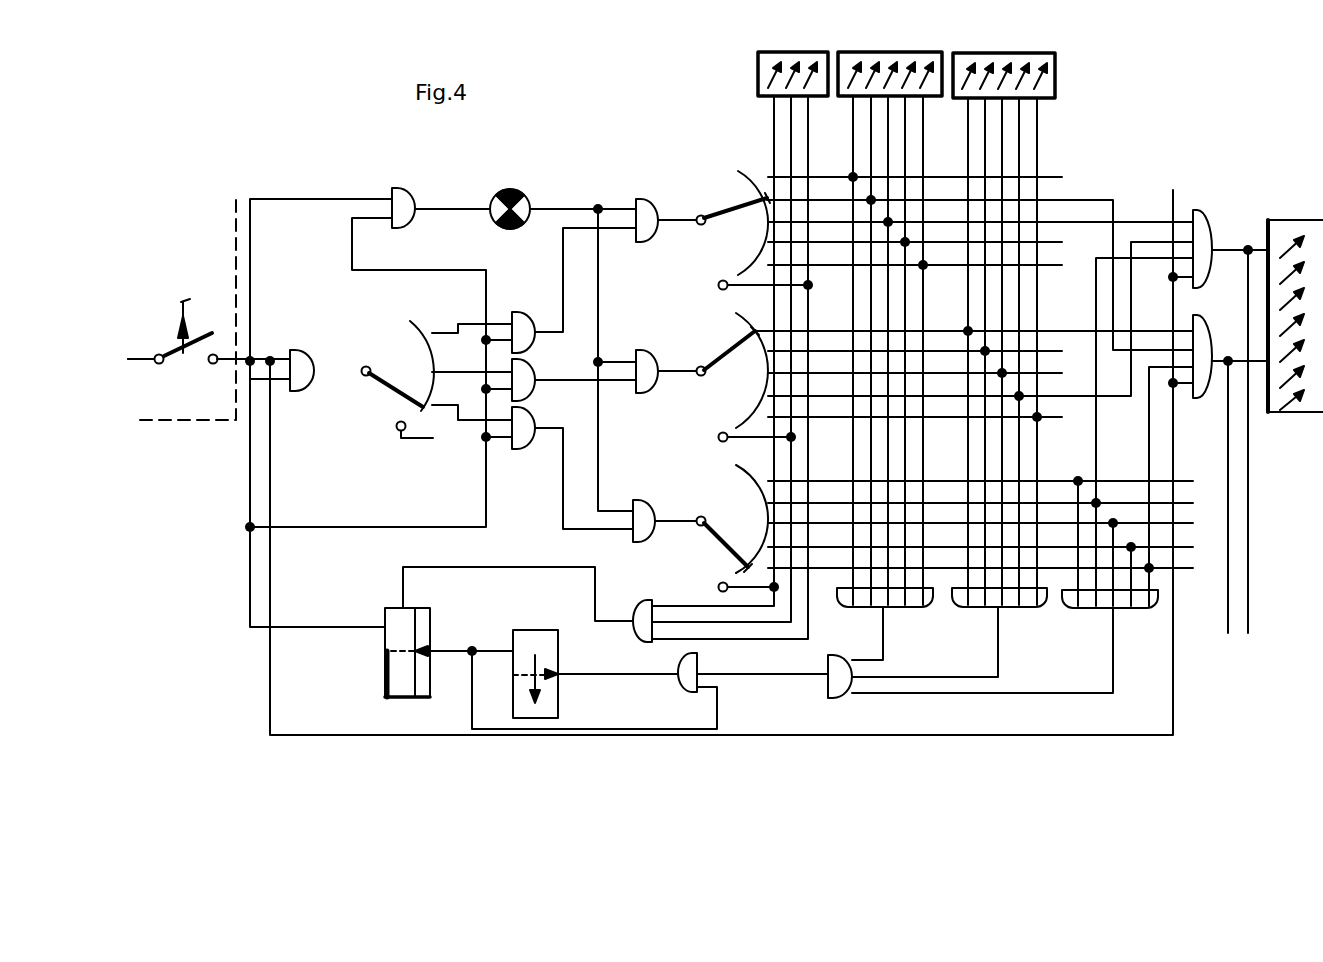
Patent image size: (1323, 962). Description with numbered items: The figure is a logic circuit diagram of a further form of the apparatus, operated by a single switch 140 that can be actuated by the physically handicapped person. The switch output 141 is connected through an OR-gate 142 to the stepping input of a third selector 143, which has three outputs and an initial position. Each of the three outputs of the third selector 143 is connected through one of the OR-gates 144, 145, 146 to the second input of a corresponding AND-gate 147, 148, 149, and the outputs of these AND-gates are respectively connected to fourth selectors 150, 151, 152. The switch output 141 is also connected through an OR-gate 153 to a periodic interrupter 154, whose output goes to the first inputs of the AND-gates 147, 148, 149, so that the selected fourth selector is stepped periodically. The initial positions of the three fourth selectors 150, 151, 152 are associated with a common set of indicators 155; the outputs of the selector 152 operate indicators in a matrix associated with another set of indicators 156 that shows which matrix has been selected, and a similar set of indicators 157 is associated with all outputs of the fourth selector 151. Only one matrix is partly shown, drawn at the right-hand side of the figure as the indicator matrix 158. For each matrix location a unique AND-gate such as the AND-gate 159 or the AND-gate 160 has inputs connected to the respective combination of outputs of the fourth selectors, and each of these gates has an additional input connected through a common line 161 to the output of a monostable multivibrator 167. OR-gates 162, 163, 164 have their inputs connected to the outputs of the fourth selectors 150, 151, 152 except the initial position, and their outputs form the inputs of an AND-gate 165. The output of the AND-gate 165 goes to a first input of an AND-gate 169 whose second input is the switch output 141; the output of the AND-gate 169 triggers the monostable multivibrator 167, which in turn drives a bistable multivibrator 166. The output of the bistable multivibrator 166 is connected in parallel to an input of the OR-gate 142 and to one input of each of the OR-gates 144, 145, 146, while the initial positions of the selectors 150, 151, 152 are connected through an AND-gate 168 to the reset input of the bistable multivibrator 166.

The switch 140 is at (180, 350).
The switch output 141 is at (214, 366).
The OR-gate 142 is at (302, 355).
The third selector 143 is at (412, 392).
The OR-gate 144 is at (556, 422).
The OR-gate 145 is at (536, 378).
The OR-gate 146 is at (520, 318).
The AND-gate 147 is at (650, 512).
The AND-gate 148 is at (650, 358).
The AND-gate 149 is at (650, 207).
The fourth selector 150 is at (740, 550).
The fourth selector 151 is at (748, 356).
The fourth selector 152 is at (746, 210).
The OR-gate 153 is at (412, 204).
The periodic interrupter 154 is at (545, 196).
The common set of indicators 155 is at (772, 52).
The set of indicators 156 is at (860, 52).
The set of indicators 157 is at (974, 53).
The output register 158 is at (1281, 412).
The AND-gate 159 is at (1205, 225).
The AND-gate 160 is at (1205, 342).
The common line 161 is at (916, 735).
The OR-gate 162 is at (911, 608).
The OR-gate 163 is at (1025, 608).
The OR-gate 164 is at (1137, 609).
The AND-gate 165 is at (832, 693).
The bistable multivibrator 166 is at (408, 622).
The monostable multivibrator 167 is at (538, 640).
The AND-gate 168 is at (643, 604).
The AND-gate 169 is at (678, 683).